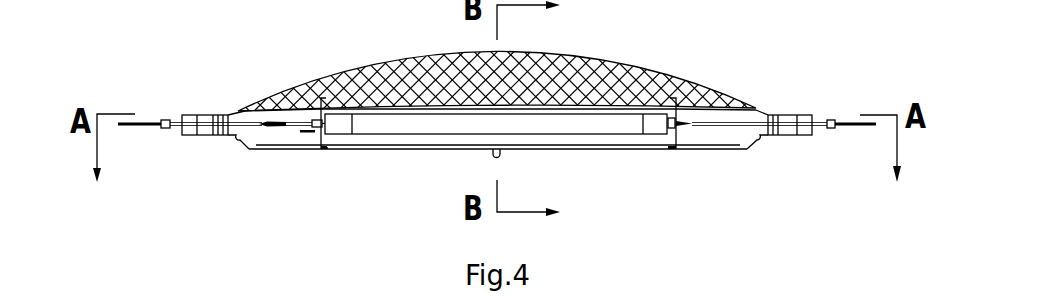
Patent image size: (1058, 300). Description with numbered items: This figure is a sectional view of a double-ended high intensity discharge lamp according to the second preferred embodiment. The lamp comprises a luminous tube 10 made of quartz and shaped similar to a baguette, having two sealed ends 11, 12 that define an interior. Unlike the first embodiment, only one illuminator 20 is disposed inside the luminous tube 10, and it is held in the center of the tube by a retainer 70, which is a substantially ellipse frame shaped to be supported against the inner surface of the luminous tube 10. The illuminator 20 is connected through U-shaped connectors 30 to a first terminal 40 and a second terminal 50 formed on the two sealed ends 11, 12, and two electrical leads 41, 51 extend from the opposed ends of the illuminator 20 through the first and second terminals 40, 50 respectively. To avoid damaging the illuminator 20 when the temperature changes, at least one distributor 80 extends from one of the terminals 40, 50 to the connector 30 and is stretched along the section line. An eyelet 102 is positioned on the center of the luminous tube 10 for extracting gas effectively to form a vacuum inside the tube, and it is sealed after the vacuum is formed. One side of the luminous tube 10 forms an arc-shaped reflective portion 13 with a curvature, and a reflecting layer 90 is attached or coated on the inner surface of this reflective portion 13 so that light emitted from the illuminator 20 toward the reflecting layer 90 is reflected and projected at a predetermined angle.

The luminous tube 10 is at (617, 150).
The sealed end 11 is at (787, 130).
The sealed end 12 is at (208, 130).
The reflective portion 13 is at (615, 80).
The illuminator 20 is at (392, 123).
The connector 30 is at (307, 133).
The first terminal 40 is at (792, 118).
The electrical lead 41 is at (847, 123).
The second terminal 50 is at (202, 120).
The electrical lead 51 is at (147, 123).
The retainer 70 is at (322, 148).
The distributor 80 is at (270, 125).
The reflecting layer 90 is at (390, 82).
The eyelet 102 is at (505, 163).